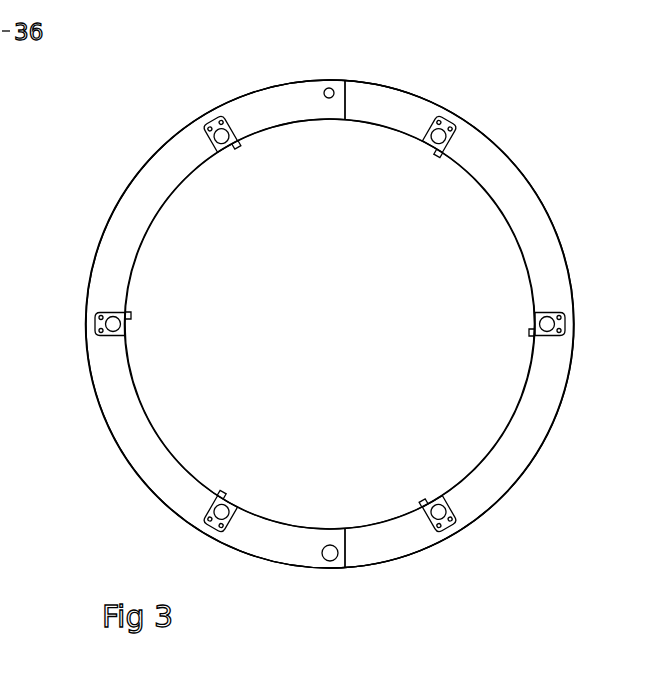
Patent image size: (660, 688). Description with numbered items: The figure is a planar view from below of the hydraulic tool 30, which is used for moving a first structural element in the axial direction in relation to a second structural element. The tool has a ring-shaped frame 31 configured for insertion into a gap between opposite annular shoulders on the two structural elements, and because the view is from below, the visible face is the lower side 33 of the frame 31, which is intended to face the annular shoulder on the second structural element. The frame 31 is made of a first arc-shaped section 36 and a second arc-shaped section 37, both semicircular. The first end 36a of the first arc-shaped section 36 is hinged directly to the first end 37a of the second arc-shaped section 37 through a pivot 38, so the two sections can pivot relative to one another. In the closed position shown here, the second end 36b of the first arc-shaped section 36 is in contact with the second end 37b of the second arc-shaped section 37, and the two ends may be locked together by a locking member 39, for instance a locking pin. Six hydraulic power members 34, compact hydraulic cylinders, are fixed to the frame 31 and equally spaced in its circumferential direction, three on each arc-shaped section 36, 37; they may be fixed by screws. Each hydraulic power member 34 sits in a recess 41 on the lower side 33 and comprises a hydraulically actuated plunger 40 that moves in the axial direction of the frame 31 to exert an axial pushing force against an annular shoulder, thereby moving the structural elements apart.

The hydraulic tool 30 is at (449, 59).
The ring-shaped frame 31 is at (97, 243).
The lower side 33 is at (276, 97).
The hydraulic power member 34 is at (218, 113).
The first arc-shaped section 36 is at (552, 402).
The first end of the first arc-shaped section 36a is at (366, 578).
The second end of the first arc-shaped section 36b is at (362, 70).
The second arc-shaped section 37 is at (107, 395).
The first end of the second arc-shaped section 37a is at (340, 582).
The second end of the second arc-shaped section 37b is at (339, 64).
The pivot 38 is at (330, 545).
The locking member 39 is at (330, 99).
The hydraulically actuated plunger 40 is at (230, 139).
The recess 41 is at (213, 152).